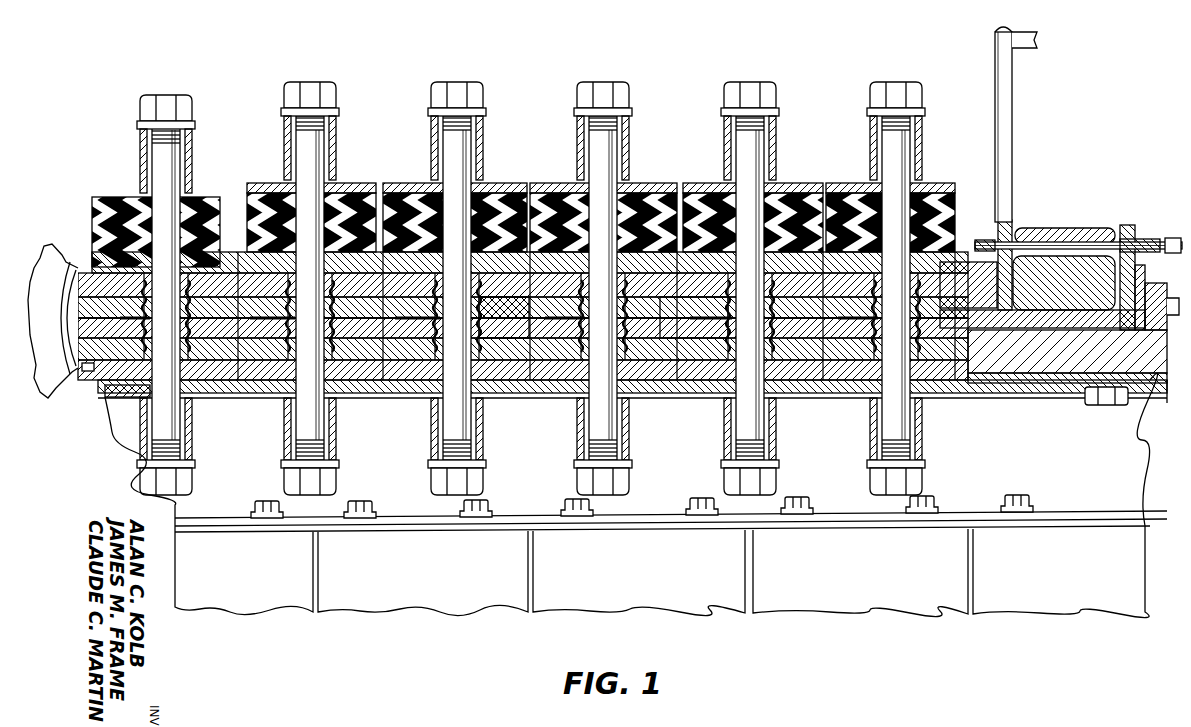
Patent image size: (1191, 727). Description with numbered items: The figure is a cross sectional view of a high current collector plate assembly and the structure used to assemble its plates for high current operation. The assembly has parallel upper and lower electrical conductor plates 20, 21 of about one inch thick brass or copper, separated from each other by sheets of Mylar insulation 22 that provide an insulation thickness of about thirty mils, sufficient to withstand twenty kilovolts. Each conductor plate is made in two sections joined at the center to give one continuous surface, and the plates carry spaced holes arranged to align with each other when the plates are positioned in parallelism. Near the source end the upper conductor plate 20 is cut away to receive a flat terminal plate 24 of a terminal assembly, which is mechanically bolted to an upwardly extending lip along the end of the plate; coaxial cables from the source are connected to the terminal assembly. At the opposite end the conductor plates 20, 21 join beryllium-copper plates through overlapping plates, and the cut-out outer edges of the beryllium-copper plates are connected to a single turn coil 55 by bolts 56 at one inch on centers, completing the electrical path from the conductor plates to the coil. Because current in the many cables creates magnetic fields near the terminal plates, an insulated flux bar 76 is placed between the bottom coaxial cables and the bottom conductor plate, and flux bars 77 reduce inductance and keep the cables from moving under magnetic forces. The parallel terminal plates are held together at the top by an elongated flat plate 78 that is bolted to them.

The upper conductor plate 20 is at (694, 307).
The lower conductor plate 21 is at (694, 328).
The sheets of Mylar insulation 22 is at (504, 317).
The terminal plate 24 is at (971, 258).
The single turn coil 55 is at (54, 383).
The bolts 56 is at (89, 363).
The insulated flux bar 76 is at (1050, 285).
The flux bars 77 is at (1035, 233).
The elongated flat plate 78 is at (1019, 37).